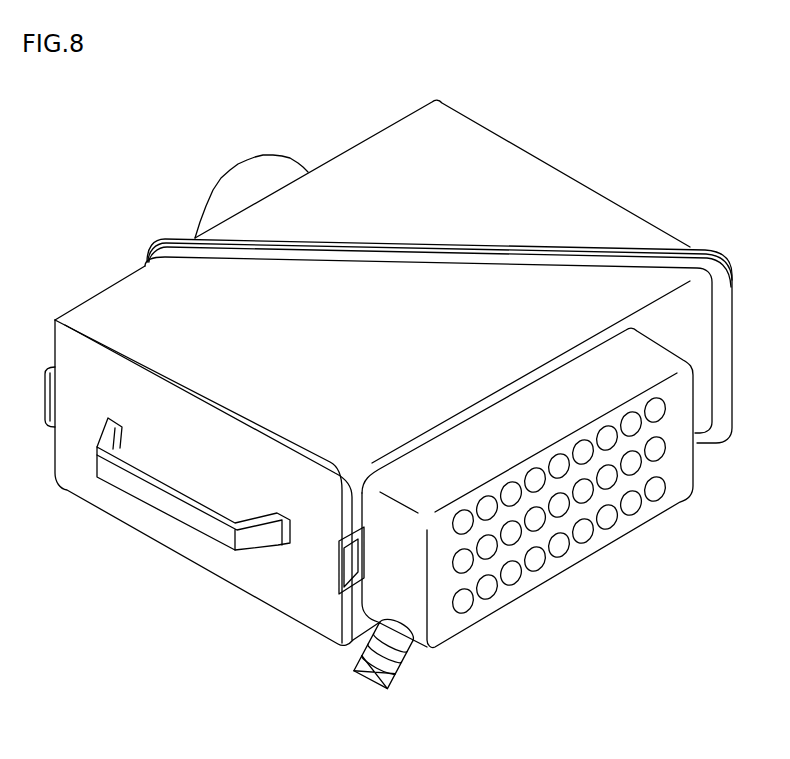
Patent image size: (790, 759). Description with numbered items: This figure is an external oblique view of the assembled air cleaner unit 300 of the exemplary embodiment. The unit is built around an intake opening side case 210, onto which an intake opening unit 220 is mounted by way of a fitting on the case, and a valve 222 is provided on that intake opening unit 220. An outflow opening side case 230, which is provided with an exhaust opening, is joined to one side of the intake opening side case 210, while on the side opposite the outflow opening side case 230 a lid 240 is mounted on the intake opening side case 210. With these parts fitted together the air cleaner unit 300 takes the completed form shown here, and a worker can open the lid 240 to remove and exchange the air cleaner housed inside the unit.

The air cleaner unit 300 is at (671, 111).
The intake opening side case 210 is at (94, 267).
The intake opening unit 220 is at (652, 552).
The valve 222 is at (417, 676).
The outflow opening side case 230 is at (335, 128).
The lid 240 is at (144, 564).